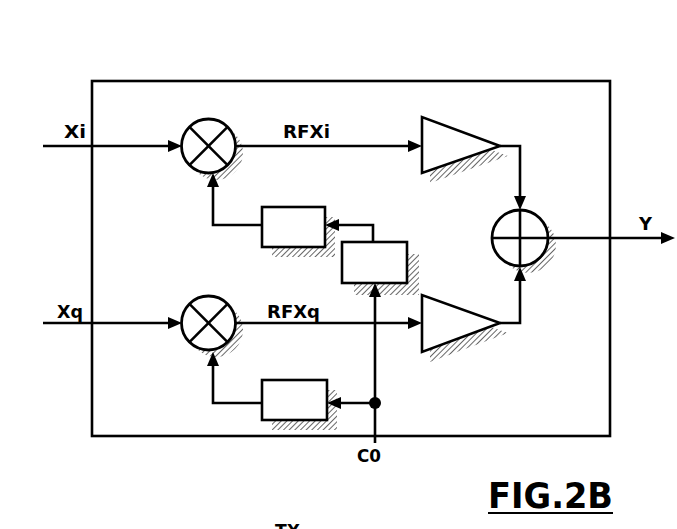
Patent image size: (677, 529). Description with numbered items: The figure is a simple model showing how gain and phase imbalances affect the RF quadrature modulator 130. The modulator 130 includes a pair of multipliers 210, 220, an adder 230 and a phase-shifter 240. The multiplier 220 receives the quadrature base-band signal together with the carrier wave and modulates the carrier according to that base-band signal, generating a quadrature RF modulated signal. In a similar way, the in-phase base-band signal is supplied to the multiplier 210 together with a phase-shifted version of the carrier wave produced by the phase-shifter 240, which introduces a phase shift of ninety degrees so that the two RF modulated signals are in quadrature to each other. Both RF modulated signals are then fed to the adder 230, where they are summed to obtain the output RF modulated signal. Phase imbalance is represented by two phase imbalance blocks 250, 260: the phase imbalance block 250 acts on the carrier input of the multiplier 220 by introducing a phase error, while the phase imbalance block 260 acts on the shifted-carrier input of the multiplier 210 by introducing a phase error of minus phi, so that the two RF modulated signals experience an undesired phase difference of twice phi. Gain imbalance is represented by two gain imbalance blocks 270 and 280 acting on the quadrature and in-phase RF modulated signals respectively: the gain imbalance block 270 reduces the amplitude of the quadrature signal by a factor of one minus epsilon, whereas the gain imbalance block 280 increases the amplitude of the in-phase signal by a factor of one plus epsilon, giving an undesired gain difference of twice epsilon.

The RF quadrature modulator 130 is at (523, 81).
The multiplier 210 is at (232, 122).
The multiplier 220 is at (235, 305).
The adder 230 is at (540, 215).
The phase-shifter 240 is at (394, 242).
The phase imbalance block 250 is at (262, 414).
The phase imbalance block 260 is at (262, 234).
The gain imbalance block 270 is at (468, 338).
The gain imbalance block 280 is at (470, 132).